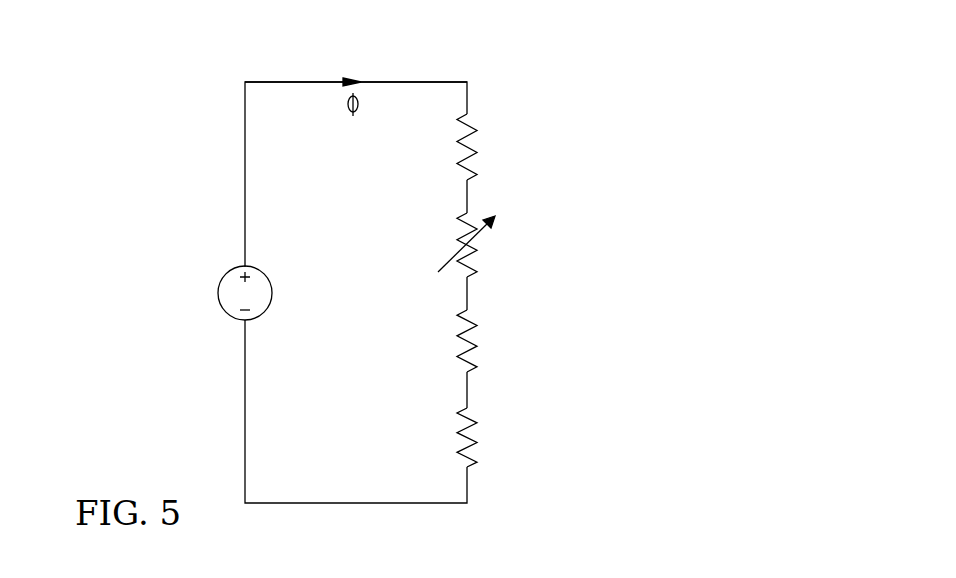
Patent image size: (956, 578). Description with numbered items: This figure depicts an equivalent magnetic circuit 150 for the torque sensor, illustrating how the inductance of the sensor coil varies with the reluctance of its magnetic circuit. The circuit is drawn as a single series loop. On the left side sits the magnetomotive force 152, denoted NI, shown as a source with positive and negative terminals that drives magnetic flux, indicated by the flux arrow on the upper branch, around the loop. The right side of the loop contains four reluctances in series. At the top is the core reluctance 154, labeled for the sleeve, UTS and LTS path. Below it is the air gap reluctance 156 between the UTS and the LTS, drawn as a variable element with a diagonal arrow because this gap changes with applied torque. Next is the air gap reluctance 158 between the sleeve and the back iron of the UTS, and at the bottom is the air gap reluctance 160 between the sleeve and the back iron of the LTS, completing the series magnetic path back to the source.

The equivalent magnetic circuit 150 is at (230, 66).
The magnetomotive force 152 is at (226, 273).
The core reluctance 154 is at (477, 124).
The air gap reluctance 156 is at (477, 222).
The air gap reluctance 158 is at (477, 318).
The air gap reluctance 160 is at (477, 414).